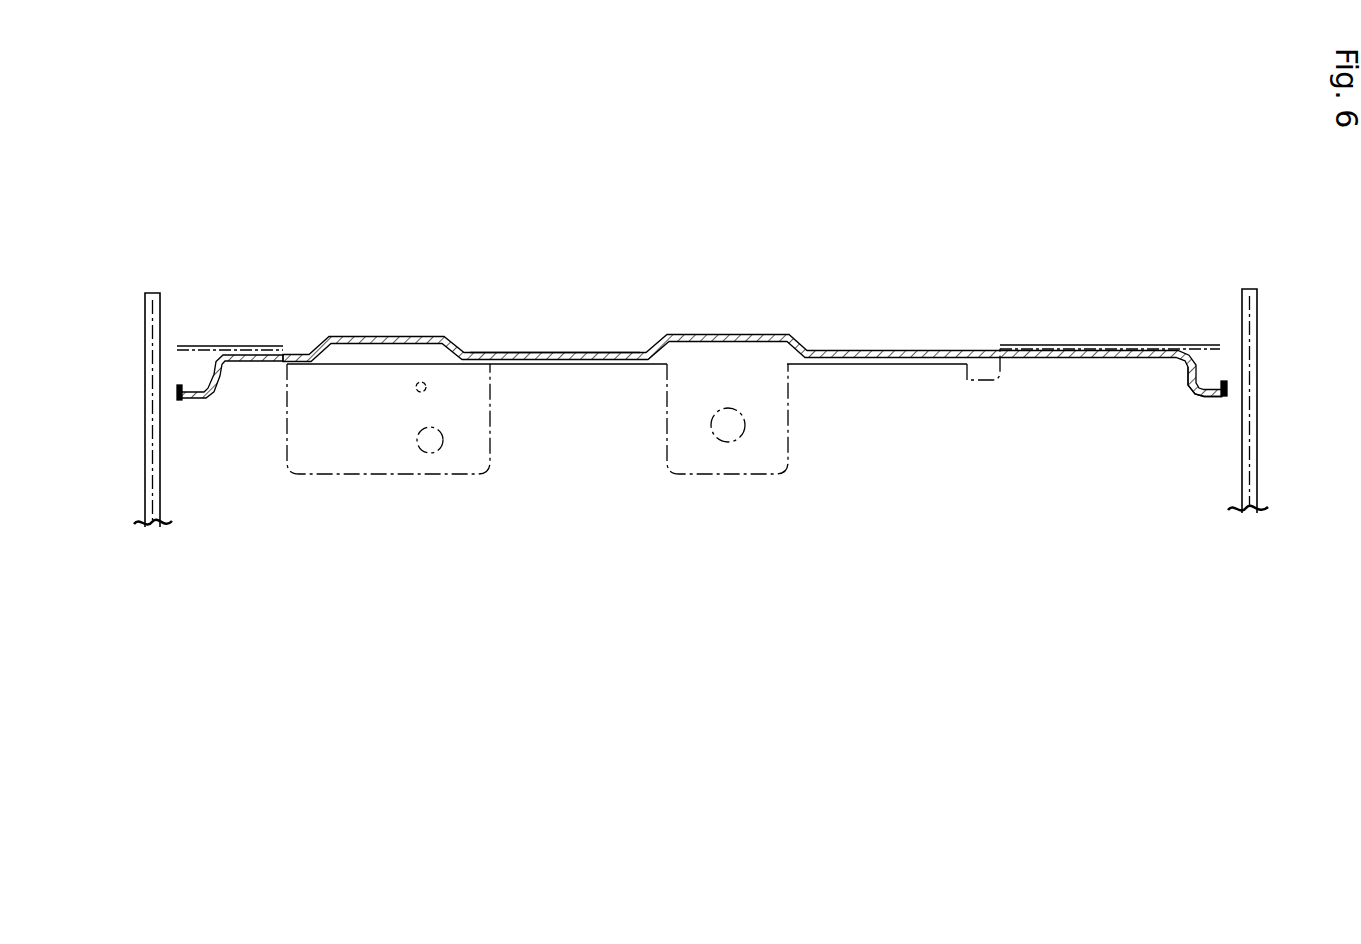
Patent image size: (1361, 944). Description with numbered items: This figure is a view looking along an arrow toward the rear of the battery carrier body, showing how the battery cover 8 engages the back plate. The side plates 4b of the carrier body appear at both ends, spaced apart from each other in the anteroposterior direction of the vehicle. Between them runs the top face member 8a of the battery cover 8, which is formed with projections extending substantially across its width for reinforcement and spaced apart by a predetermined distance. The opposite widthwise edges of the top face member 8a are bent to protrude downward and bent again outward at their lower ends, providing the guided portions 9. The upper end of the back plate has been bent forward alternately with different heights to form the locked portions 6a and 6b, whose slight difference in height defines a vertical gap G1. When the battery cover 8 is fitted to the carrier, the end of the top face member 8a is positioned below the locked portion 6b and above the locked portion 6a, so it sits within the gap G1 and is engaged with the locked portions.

The side plate 4b is at (153, 413).
The locked portion 6a is at (583, 368).
The locked portion 6b is at (207, 347).
The battery cover 8 is at (527, 330).
The top face member 8a is at (600, 353).
The guided portion 9 is at (190, 402).
The gap G1 is at (296, 325).